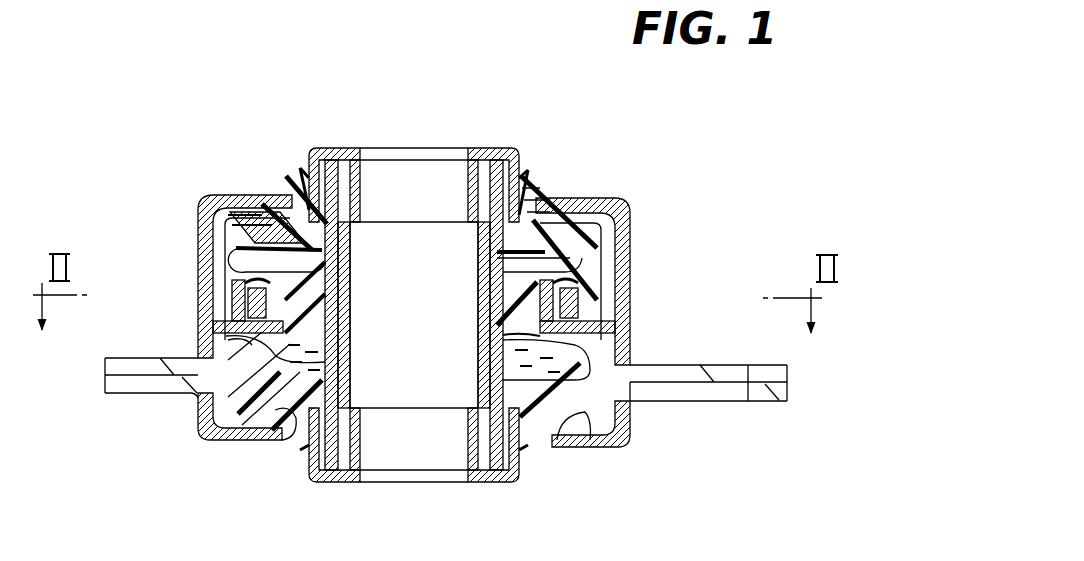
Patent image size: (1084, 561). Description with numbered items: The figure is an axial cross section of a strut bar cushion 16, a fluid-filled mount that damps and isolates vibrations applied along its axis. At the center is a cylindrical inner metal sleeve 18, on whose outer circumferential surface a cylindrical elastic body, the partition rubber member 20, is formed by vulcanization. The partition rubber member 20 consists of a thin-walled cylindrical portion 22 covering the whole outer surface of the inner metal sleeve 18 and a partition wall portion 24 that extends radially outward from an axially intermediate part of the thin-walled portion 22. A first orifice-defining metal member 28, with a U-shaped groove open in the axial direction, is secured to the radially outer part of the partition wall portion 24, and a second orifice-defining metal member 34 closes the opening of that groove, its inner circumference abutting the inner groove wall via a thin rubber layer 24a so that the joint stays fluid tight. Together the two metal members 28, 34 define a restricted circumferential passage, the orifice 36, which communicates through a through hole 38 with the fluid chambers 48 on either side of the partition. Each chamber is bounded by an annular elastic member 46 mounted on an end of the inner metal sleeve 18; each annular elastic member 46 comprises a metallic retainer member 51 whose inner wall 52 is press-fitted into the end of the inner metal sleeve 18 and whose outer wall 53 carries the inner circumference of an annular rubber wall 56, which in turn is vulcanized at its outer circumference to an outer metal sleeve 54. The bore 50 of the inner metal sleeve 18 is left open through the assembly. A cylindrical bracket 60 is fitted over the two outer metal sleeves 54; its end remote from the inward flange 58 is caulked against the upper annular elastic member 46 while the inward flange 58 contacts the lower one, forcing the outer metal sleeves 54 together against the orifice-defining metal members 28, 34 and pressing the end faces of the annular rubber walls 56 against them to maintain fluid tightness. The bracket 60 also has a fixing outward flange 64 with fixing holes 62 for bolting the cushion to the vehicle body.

The strut bar cushion 16 is at (704, 178).
The inner metal sleeve 18 is at (346, 292).
The partition rubber member 20 is at (512, 362).
The thin-walled cylindrical portion 22 is at (333, 366).
The partition wall portion 24 is at (258, 242).
The thin rubber layer 24a is at (287, 418).
The first orifice-defining metal member 28 is at (262, 262).
The second orifice-defining metal member 34 is at (636, 328).
The orifice 36 is at (243, 300).
The through hole 38 is at (567, 270).
The annular elastic member 46 is at (285, 167).
The fluid chamber 48 is at (233, 210).
The bore 50 is at (470, 340).
The retainer member 51 is at (348, 146).
The inner wall 52 is at (454, 160).
The outer wall 53 is at (529, 178).
The outer metal sleeve 54 is at (614, 232).
The annular rubber wall 56 is at (538, 200).
The inward flange 58 is at (233, 433).
The cylindrical bracket 60 is at (122, 354).
The fixing holes 62 is at (736, 364).
The fixing outward flange 64 is at (673, 399).